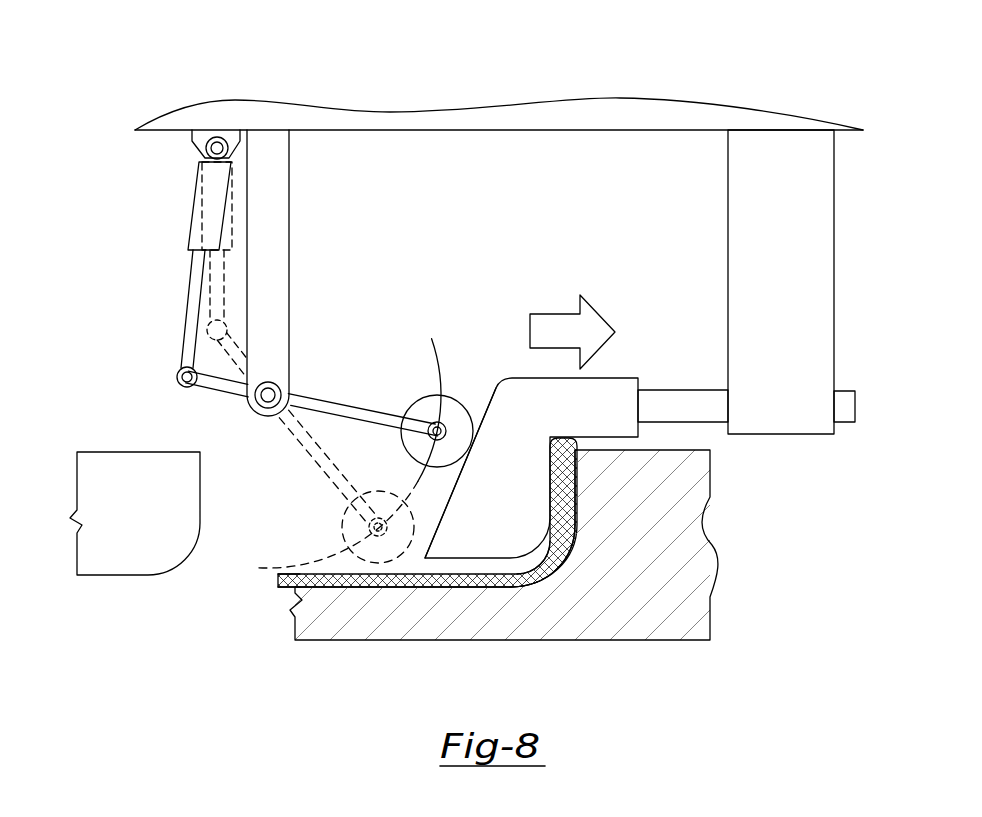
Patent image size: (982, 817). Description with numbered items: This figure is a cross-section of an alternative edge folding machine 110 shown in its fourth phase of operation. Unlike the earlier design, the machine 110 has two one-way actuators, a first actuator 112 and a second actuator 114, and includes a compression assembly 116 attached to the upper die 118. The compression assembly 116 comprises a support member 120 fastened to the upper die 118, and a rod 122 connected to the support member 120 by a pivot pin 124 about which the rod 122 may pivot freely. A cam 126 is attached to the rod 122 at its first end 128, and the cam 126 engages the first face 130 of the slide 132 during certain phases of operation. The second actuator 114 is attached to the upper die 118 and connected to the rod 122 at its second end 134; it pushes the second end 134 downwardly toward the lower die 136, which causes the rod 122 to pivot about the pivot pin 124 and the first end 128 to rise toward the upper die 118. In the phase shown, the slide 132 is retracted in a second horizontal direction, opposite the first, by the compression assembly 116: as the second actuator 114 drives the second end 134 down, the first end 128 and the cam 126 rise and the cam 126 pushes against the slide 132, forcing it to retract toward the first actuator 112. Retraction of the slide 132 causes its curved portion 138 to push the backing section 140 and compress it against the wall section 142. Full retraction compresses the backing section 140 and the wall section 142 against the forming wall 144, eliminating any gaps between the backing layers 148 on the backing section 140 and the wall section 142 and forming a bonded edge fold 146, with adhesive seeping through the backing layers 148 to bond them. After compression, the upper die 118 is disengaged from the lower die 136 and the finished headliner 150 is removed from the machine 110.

The machine 110 is at (196, 72).
The first actuator 112 is at (820, 426).
The second actuator 114 is at (198, 226).
The compression assembly 116 is at (330, 278).
The upper die 118 is at (383, 112).
The support member 120 is at (286, 192).
The rod 122 is at (317, 403).
The pivot pin 124 is at (267, 400).
The cam 126 is at (457, 412).
The first end 128 is at (433, 422).
The first face 130 is at (465, 478).
The slide 132 is at (552, 411).
The second end 134 is at (178, 375).
The lower die 136 is at (688, 522).
The curved portion 138 is at (553, 542).
The backing section 140 is at (552, 462).
The wall section 142 is at (577, 500).
The forming wall 144 is at (580, 522).
The bonded edge fold 146 is at (580, 449).
The backing layers 148 is at (308, 576).
The headliner 150 is at (283, 582).